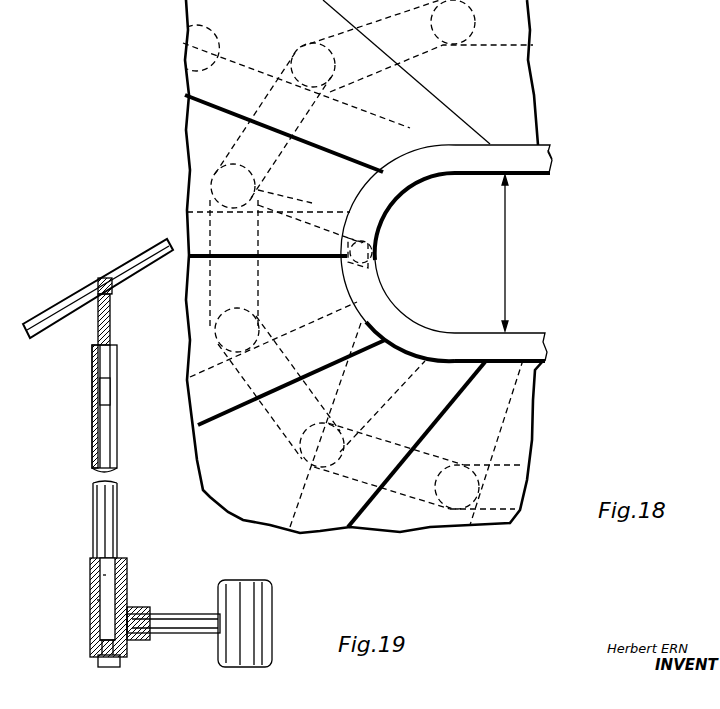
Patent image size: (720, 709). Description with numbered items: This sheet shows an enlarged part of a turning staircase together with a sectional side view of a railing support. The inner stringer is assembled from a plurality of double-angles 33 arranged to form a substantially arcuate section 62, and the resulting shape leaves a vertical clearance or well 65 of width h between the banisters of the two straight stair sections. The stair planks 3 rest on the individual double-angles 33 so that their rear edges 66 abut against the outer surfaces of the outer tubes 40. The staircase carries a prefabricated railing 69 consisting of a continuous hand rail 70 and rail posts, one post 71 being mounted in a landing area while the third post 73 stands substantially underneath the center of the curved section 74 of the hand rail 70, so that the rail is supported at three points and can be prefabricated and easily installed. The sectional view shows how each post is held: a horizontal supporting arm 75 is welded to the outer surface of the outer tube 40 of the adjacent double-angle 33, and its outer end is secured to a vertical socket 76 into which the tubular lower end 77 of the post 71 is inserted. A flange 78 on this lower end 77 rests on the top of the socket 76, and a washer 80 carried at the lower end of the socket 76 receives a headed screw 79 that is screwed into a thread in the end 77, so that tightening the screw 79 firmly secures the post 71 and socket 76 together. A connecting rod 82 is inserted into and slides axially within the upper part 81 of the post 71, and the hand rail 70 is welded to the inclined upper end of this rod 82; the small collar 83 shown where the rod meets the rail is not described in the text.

In FIG. 18, the stair plank 3 is at (523, 72).
In FIG. 18, the double-angle 33 is at (330, 37).
In FIG. 18, the outer tube 40 is at (298, 50).
In FIG. 19, the outer tube 40 is at (273, 632).
In FIG. 18, the arcuate section 62 is at (238, 137).
In FIG. 18, the well 65 is at (473, 240).
In FIG. 18, the rear edge 66 is at (185, 59).
In FIG. 18, the prefabricated railing 69 is at (556, 152).
In FIG. 18, the hand rail 70 is at (530, 165).
In FIG. 19, the hand rail 70 is at (52, 317).
In FIG. 19, the rail post 71 is at (107, 434).
In FIG. 18, the rail post 73 is at (372, 255).
In FIG. 18, the curved section 74 is at (374, 296).
In FIG. 18, the supporting arm 75 is at (287, 213).
In FIG. 19, the supporting arm 75 is at (176, 616).
In FIG. 19, the socket 76 is at (97, 600).
In FIG. 19, the lower end of post 77 is at (103, 575).
In FIG. 19, the flange 78 is at (125, 560).
In FIG. 19, the headed screw 79 is at (120, 660).
In FIG. 19, the washer 80 is at (97, 652).
In FIG. 19, the upper part of post 81 is at (113, 381).
In FIG. 19, the connecting rod 82 is at (112, 320).
In FIG. 19, the collar 83 is at (103, 288).